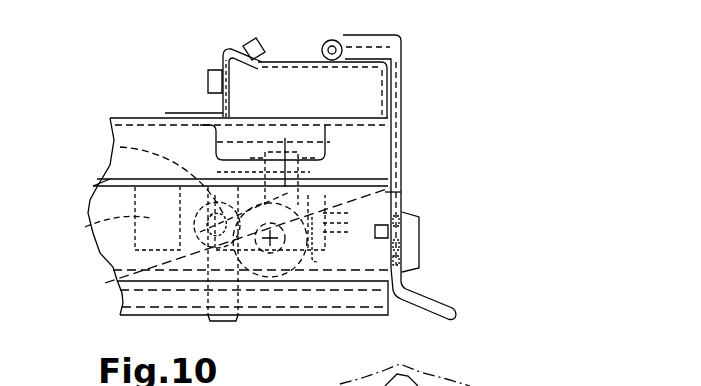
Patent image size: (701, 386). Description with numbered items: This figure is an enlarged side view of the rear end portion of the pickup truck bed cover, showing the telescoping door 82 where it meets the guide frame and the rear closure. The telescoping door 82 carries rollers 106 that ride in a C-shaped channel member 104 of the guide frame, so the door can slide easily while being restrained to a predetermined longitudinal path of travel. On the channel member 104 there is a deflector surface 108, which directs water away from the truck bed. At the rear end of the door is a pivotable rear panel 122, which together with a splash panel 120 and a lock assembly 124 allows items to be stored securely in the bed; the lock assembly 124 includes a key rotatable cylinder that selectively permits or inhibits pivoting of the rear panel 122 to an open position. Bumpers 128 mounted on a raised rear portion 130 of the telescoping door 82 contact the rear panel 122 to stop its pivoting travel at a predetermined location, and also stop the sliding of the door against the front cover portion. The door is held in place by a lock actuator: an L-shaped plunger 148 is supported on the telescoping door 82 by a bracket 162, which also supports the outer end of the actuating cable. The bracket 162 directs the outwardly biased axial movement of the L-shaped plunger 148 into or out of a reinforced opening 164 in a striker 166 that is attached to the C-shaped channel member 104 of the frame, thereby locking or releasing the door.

The telescoping door 82 is at (137, 117).
The C-shaped channel member 104 is at (101, 188).
The roller 106 is at (402, 192).
The deflector surface 108 is at (355, 297).
The splash panel 120 is at (442, 300).
The pivotable rear panel 122 is at (401, 148).
The lock assembly 124 is at (418, 234).
The bumper 128 is at (212, 78).
The raised rear portion 130 is at (290, 62).
The L-shaped plunger 148 is at (220, 322).
The bracket 162 is at (120, 146).
The reinforced opening 164 is at (112, 284).
The striker 166 is at (85, 227).